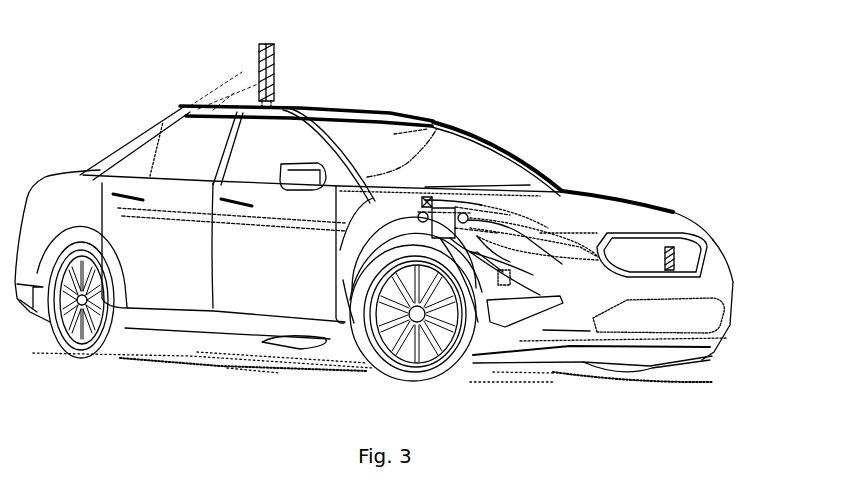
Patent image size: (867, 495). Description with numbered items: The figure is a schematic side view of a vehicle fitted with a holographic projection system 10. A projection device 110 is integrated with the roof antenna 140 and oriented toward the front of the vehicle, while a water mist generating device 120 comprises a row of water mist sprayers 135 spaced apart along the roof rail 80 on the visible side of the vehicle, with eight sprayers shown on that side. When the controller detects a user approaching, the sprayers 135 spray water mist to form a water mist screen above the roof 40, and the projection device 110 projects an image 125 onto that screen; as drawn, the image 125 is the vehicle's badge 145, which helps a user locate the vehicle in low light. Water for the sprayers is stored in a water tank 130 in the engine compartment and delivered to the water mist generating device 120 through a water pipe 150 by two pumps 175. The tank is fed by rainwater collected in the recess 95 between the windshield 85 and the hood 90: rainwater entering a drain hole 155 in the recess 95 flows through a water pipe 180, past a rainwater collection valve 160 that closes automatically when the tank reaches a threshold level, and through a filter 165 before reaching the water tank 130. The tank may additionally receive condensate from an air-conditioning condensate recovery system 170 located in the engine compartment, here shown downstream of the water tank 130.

The holographic projection system 10 is at (166, 92).
The roof 40 is at (368, 108).
The roof rail 80 is at (262, 128).
The windshield 85 is at (438, 120).
The hood 90 is at (591, 205).
The recess 95 is at (480, 188).
The projection device 110 is at (180, 108).
The water mist generating device 120 is at (287, 105).
The image 125 is at (292, 53).
The water tank 130 is at (512, 277).
The water mist sprayer 135 is at (211, 123).
The roof antenna 140 is at (308, 100).
The badge 145 is at (683, 260).
The water pipe 150 is at (513, 208).
The drain hole 155 is at (328, 243).
The rainwater collection valve 160 is at (444, 223).
The filter 165 is at (513, 210).
The air-conditioning condensate recovery system 170 is at (540, 295).
The pump 175 is at (335, 273).
The water pipe 180 is at (431, 196).